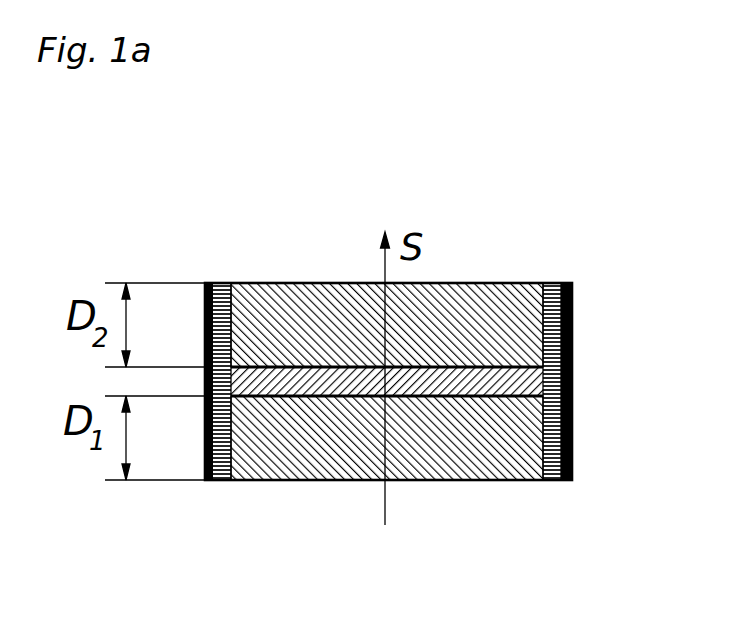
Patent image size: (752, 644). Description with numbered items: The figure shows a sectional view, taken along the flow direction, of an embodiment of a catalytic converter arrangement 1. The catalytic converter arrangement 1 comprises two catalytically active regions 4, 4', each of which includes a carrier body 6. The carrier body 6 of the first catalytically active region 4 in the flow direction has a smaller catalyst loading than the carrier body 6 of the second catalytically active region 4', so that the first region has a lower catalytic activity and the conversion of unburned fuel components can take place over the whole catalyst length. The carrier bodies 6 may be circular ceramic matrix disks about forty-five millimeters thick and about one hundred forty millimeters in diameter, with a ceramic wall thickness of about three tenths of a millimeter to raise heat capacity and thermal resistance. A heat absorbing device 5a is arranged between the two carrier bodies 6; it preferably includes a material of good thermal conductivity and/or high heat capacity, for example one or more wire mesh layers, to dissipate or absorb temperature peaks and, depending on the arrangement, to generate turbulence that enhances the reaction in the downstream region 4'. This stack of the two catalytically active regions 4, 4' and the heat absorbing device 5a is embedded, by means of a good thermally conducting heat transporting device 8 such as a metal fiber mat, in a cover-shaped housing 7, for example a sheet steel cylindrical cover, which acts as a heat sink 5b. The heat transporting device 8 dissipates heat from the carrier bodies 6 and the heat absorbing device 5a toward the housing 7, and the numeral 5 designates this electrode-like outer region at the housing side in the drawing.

The catalytic converter arrangement 1 is at (173, 220).
The first catalytically active region 4 is at (391, 511).
The second catalytically active region 4' is at (401, 260).
The electrode 5 is at (597, 390).
The heat absorbing device 5a is at (471, 378).
The heat sink 5b is at (208, 283).
The carrier body 6 is at (315, 320).
The housing 7 is at (572, 333).
The heat transporting device 8 is at (221, 448).